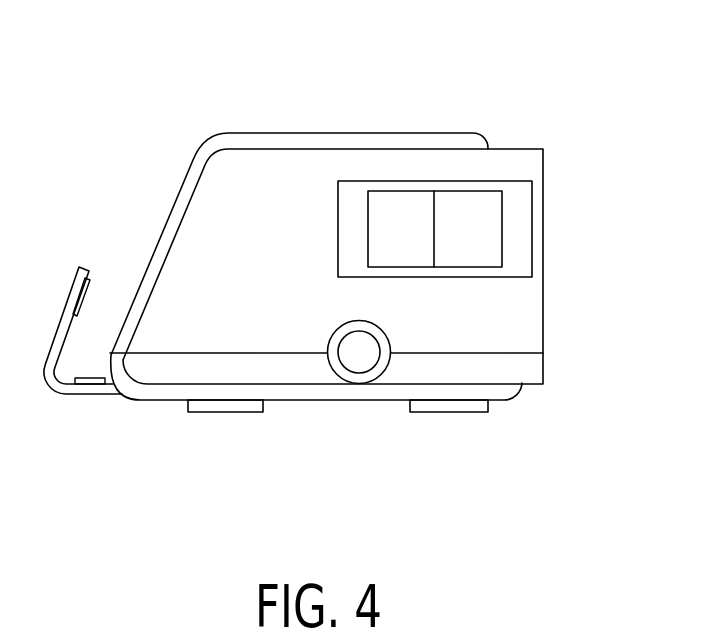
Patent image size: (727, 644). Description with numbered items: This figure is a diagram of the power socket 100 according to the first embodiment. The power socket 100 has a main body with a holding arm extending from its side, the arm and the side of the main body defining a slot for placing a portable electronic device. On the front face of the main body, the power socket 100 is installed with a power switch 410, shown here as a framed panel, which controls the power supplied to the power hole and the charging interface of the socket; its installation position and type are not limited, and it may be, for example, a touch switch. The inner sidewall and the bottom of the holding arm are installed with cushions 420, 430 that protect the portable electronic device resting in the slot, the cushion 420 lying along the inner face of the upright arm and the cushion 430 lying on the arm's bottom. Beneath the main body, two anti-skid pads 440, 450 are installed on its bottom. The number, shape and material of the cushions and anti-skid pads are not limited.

The power socket 100 is at (340, 127).
The power switch 410 is at (487, 227).
The cushion 420 is at (88, 297).
The cushion 430 is at (92, 384).
The anti-skid pad 440 is at (238, 407).
The anti-skid pad 450 is at (450, 407).